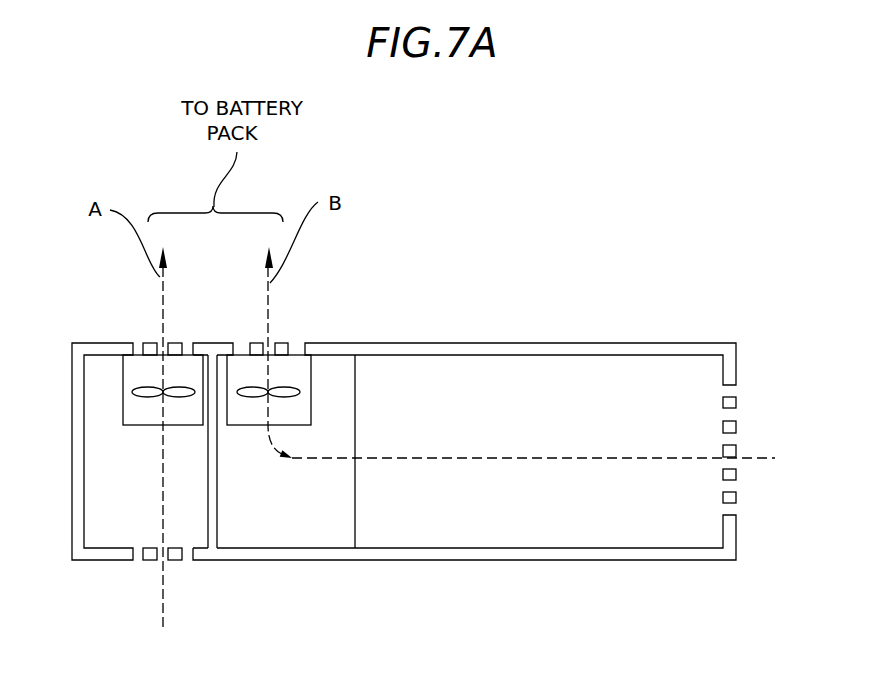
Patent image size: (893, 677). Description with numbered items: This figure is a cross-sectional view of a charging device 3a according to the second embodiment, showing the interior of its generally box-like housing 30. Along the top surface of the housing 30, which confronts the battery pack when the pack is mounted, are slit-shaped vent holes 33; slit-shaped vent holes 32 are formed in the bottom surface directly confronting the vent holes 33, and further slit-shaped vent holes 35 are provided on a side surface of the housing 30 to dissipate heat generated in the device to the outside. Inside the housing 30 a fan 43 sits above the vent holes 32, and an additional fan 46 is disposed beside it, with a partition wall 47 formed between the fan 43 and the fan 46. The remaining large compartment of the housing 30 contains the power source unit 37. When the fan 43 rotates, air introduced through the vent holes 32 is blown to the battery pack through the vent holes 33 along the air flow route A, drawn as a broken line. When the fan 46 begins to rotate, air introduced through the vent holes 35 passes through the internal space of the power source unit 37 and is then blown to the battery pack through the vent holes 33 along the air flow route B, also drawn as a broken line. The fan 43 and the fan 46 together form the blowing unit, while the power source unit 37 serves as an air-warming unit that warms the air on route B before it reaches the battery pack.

The charging device 3a is at (747, 277).
The housing 30 is at (632, 342).
The vent holes 32 is at (125, 583).
The vent holes 33 is at (130, 319).
The vent holes 35 is at (750, 381).
The power source unit 37 is at (570, 527).
The fan 43 is at (123, 398).
The fan 46 is at (312, 392).
The partition wall 47 is at (217, 502).